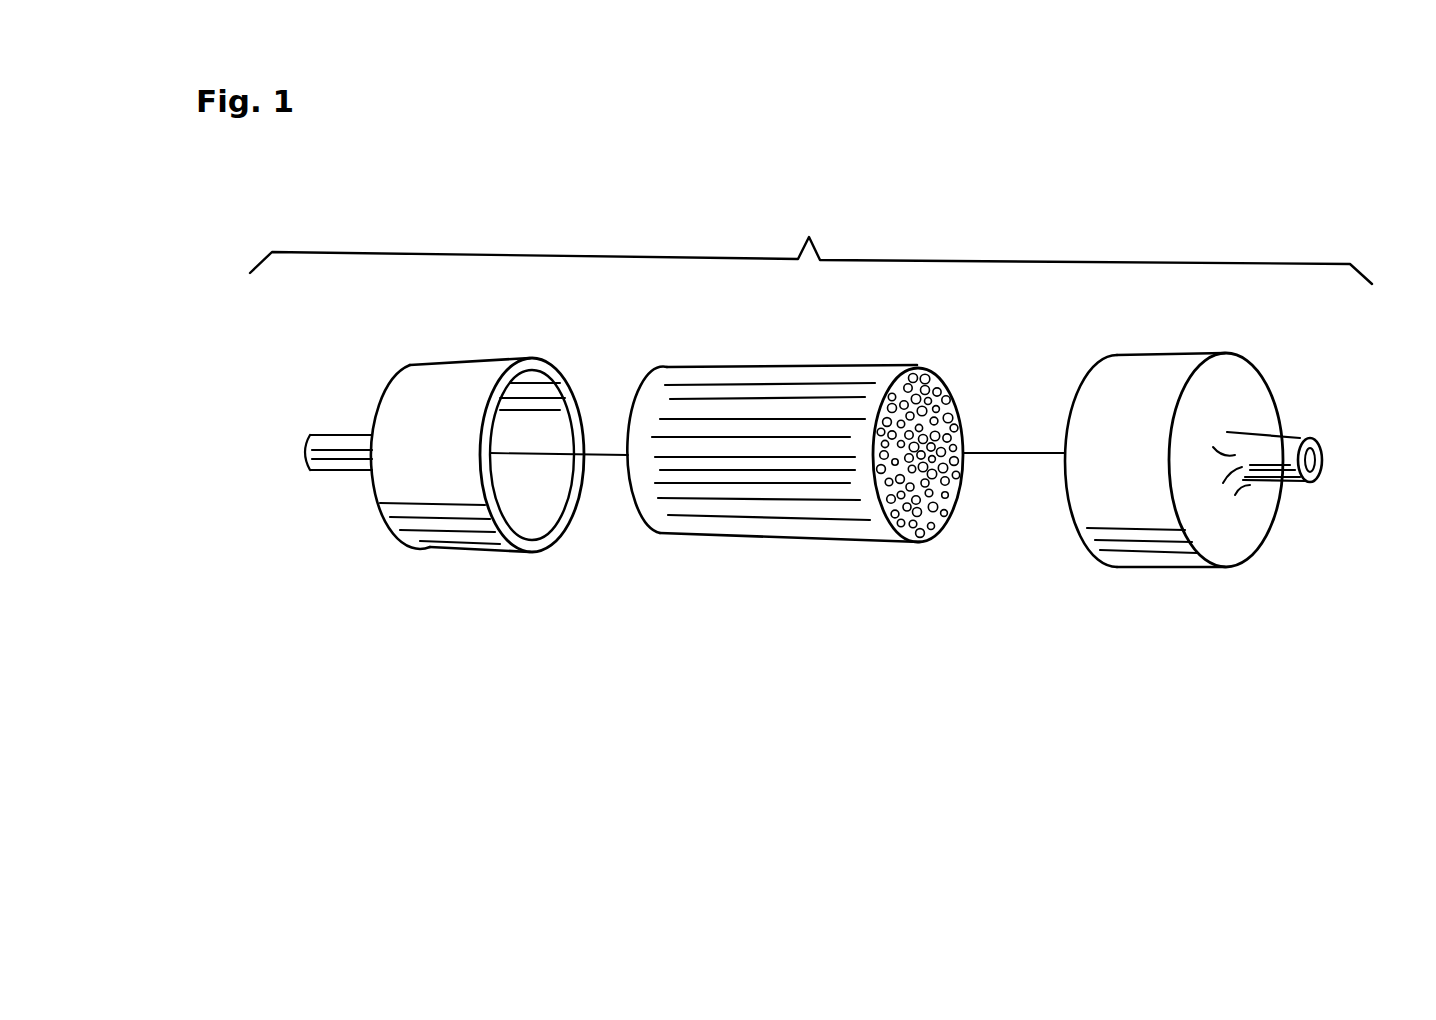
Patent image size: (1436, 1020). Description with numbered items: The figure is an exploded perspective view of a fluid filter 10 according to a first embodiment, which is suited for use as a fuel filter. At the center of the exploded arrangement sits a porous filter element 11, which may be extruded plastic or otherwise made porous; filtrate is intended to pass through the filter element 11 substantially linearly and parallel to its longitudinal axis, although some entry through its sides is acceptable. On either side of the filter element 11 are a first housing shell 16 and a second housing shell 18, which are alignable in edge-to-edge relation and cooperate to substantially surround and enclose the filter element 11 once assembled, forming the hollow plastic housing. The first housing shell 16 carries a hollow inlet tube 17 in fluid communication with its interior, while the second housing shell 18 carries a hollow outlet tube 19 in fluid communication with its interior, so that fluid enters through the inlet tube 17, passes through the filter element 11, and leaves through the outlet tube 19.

The fluid filter 10 is at (811, 231).
The porous filter element 11 is at (805, 545).
The first housing shell 16 is at (452, 425).
The hollow inlet tube 17 is at (328, 433).
The second housing shell 18 is at (1140, 430).
The hollow outlet tube 19 is at (1307, 433).